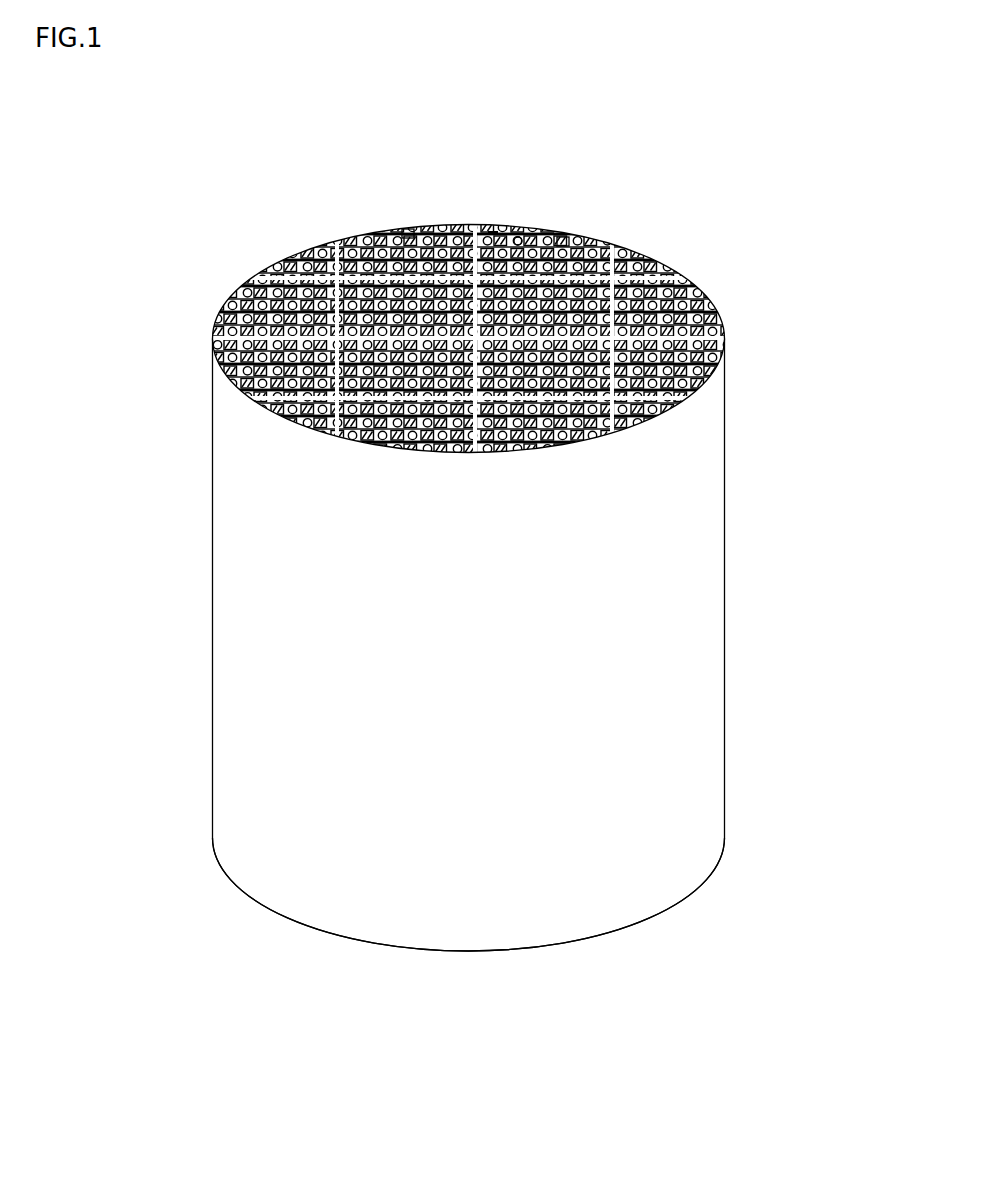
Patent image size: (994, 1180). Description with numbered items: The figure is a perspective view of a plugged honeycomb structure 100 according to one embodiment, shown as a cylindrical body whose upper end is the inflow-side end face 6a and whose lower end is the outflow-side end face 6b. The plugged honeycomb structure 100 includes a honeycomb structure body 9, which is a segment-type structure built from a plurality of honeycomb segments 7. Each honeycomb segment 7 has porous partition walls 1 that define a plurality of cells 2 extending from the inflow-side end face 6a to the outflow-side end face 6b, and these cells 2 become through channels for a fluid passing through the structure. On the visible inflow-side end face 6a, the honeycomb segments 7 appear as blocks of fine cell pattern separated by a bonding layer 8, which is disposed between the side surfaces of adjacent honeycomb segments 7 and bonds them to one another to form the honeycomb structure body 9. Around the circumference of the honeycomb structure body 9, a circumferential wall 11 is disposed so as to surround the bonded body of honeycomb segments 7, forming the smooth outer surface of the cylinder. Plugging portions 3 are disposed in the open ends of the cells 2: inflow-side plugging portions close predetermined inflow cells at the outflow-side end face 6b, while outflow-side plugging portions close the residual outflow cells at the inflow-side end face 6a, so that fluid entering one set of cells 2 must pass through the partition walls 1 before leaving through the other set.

The plugged honeycomb structure 100 is at (808, 132).
The partition wall 1 is at (493, 238).
The cell 2 is at (518, 238).
The plugging portion 3 is at (408, 228).
The inflow-side end face 6a is at (289, 243).
The outflow-side end face 6b is at (277, 927).
The honeycomb segment 7 is at (615, 350).
The bonding layer 8 is at (637, 252).
The honeycomb structure body 9 is at (729, 554).
The circumferential wall 11 is at (687, 475).